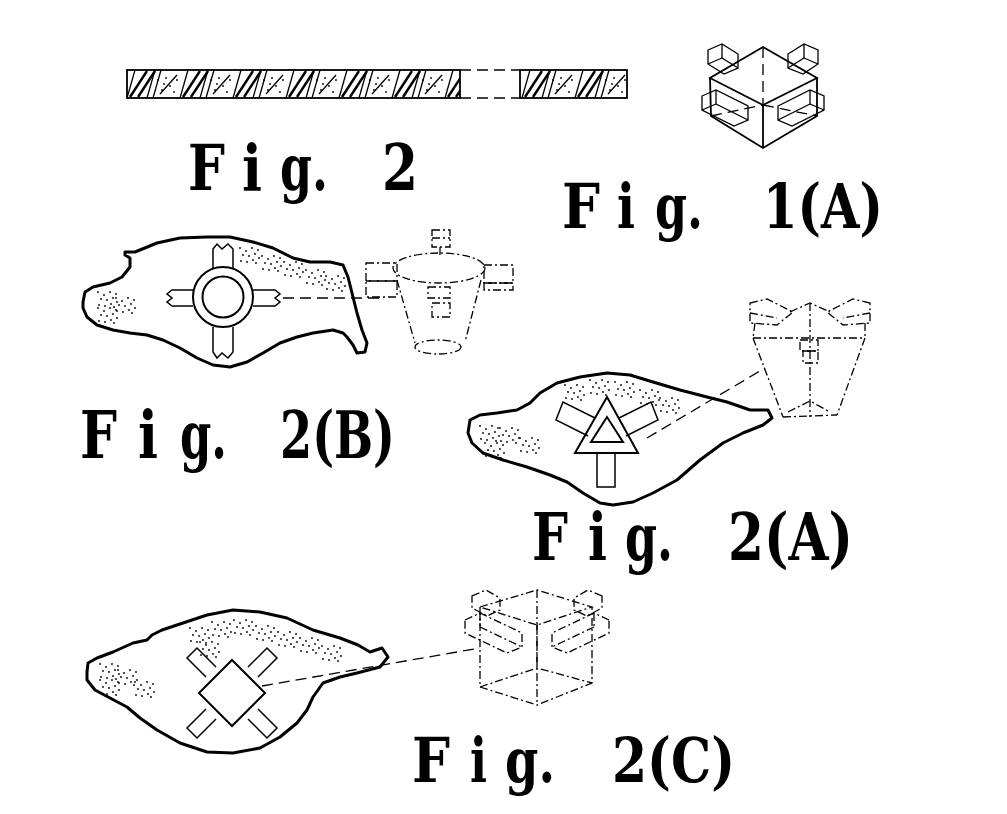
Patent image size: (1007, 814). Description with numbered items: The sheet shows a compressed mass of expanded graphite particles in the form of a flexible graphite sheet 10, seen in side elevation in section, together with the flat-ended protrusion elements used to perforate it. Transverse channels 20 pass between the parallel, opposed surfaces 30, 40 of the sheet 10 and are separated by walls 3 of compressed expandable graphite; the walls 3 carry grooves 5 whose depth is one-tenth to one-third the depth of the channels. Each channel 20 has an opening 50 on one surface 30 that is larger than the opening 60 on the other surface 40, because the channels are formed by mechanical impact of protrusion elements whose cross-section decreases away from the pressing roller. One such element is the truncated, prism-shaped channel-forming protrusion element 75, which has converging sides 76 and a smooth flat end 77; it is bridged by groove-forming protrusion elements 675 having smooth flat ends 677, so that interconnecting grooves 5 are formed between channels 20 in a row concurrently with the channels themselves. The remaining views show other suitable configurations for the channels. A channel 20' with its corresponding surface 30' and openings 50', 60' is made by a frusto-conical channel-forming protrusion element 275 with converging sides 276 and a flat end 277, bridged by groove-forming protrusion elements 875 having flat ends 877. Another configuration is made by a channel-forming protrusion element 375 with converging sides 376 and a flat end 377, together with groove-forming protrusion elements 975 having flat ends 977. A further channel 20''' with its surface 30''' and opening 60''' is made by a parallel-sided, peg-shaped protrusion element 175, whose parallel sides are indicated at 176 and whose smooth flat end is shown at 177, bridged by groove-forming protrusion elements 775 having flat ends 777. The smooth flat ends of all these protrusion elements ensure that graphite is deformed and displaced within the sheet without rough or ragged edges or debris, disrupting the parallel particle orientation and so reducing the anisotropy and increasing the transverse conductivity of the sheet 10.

In FIG. 2, the flexible graphite sheet 10 is at (628, 82).
In FIG. 2, the channels 20 is at (169, 49).
In FIG. 2, the opposed surface 30 is at (547, 52).
In FIG. 2, the opposed surface 40 is at (566, 97).
In FIG. 2, the channel openings 50 is at (261, 54).
In FIG. 2, the channel openings 60 is at (142, 120).
In FIG. 2, the grooves 5 is at (203, 70).
In FIG. 2, the walls 3 is at (193, 97).
In FIG. 1A, the channel-forming protrusion element 75 is at (750, 76).
In FIG. 1A, the converging sides 76 is at (812, 92).
In FIG. 1A, the smooth flat end 77 is at (742, 138).
In FIG. 1A, the groove-forming protrusion element 675 is at (792, 98).
In FIG. 1A, the smooth flat end 677 is at (800, 128).
In FIG. 2B, the channel 20' is at (225, 285).
In FIG. 2B, the second layer (second embodiment) 30' is at (314, 355).
In FIG. 2B, the cross-shaped connector 50' is at (205, 314).
In FIG. 2B, the ring receptacle 60' is at (268, 276).
In FIG. 2B, the groove-forming protrusion element 875 is at (432, 242).
In FIG. 2B, the frusto-conical channel-forming protrusion element 275 is at (460, 254).
In FIG. 2B, the converging sides 276 is at (478, 330).
In FIG. 2B, the bottom tab 877 is at (422, 347).
In FIG. 2B, the smooth flat end 277 is at (452, 353).
In FIG. 2A, the channel-forming protrusion element 375 is at (812, 310).
In FIG. 2A, the groove-forming protrusion element 975 is at (853, 299).
In FIG. 2A, the converging sides 376 is at (762, 365).
In FIG. 2A, the smooth flat end 977 is at (823, 418).
In FIG. 2A, the smooth flat end 377 is at (808, 418).
In FIG. 2C, the first layer (fourth embodiment) 20''' is at (237, 668).
In FIG. 2C, the X-shaped connector arms 30''' is at (261, 705).
In FIG. 2C, the square receptacle 60''' is at (264, 665).
In FIG. 2C, the groove-forming protrusion element 775 is at (560, 613).
In FIG. 2C, the smooth flat end 777 is at (480, 622).
In FIG. 2C, the parallel-sided peg-shaped protrusion element 175 is at (602, 640).
In FIG. 2C, the front edge 176 is at (481, 668).
In FIG. 2C, the smooth flat end 177 is at (577, 702).